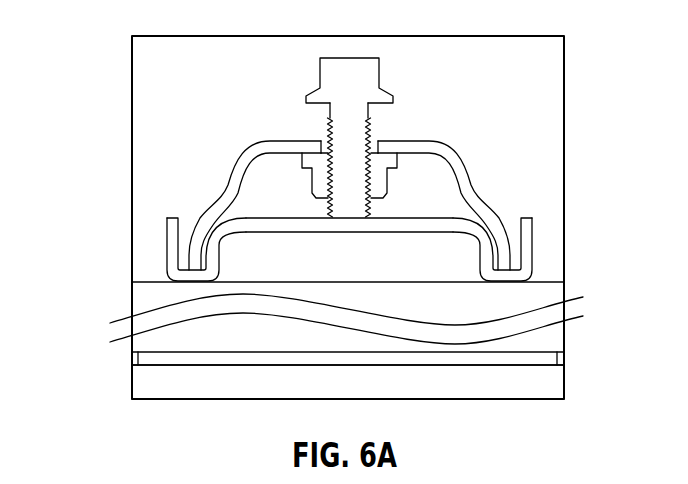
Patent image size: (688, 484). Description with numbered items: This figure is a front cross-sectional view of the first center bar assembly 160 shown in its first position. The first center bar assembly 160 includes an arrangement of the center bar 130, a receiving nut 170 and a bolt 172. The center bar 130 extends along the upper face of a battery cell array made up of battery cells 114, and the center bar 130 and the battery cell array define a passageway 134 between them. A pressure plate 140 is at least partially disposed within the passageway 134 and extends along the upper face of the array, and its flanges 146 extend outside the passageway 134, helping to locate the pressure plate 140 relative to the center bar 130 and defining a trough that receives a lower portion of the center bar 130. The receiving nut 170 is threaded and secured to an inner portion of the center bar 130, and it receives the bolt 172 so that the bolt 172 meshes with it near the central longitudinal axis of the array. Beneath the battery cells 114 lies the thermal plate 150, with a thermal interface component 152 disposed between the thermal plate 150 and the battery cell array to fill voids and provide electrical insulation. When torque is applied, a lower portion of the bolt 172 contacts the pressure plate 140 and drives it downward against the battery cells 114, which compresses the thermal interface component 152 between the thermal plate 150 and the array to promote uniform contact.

The battery cell 114 is at (140, 296).
The center bar 130 is at (228, 172).
The passageway 134 is at (349, 169).
The pressure plate 140 is at (342, 219).
The flange 146 is at (165, 242).
The thermal plate 150 is at (178, 382).
The thermal interface component 152 is at (225, 358).
The first center bar assembly 160 is at (348, 108).
The receiving nut 170 is at (420, 141).
The bolt 172 is at (368, 77).